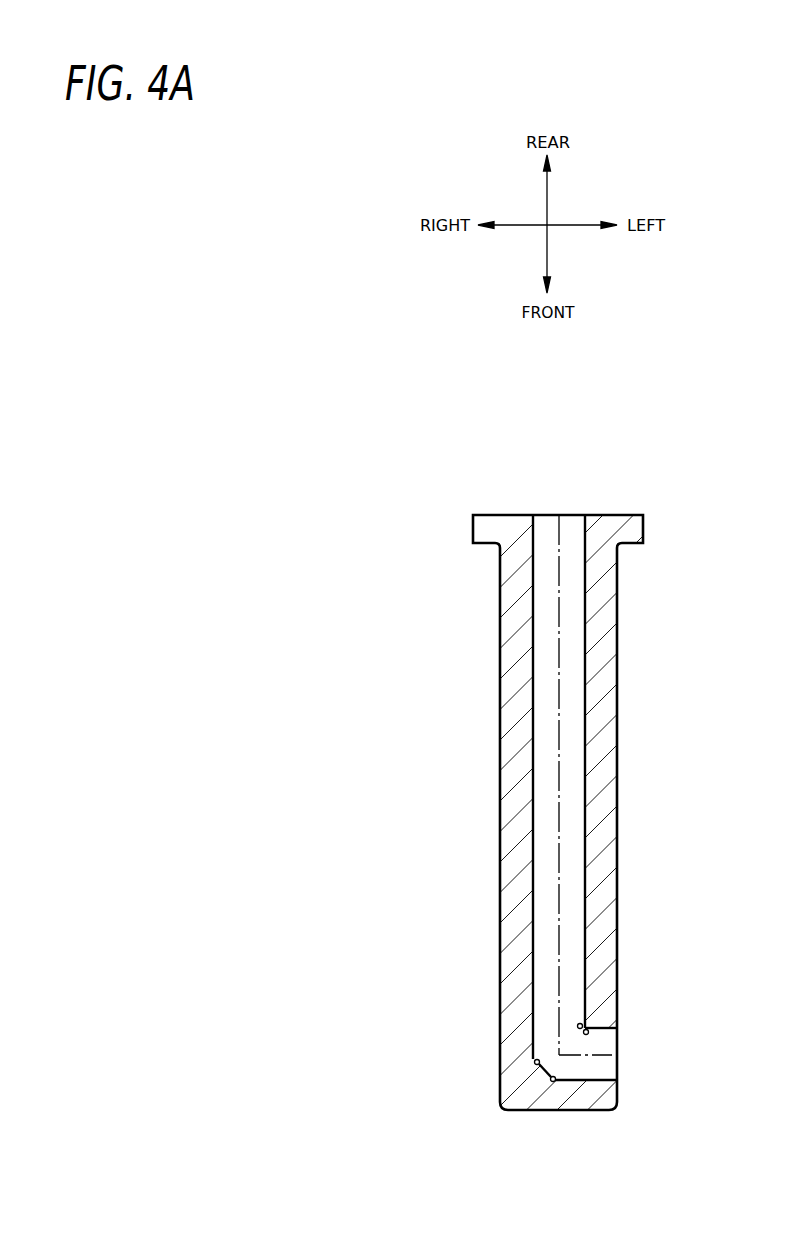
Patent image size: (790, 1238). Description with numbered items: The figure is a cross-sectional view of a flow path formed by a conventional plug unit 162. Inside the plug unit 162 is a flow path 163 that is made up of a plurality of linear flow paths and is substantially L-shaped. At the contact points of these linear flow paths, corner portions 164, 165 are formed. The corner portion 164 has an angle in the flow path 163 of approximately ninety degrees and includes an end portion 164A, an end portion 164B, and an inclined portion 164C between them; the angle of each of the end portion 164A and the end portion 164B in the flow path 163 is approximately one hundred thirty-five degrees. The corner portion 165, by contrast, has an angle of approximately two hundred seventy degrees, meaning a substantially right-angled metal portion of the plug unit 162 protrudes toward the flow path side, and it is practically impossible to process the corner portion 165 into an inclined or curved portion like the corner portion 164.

The conventional plug unit 162 is at (578, 464).
The flow path 163 is at (577, 965).
The corner portion 164 is at (478, 1109).
The end portion 164A is at (556, 1079).
The end portion 164B is at (537, 1059).
The inclined portion 164C is at (545, 1071).
The corner portion 165 is at (585, 1034).